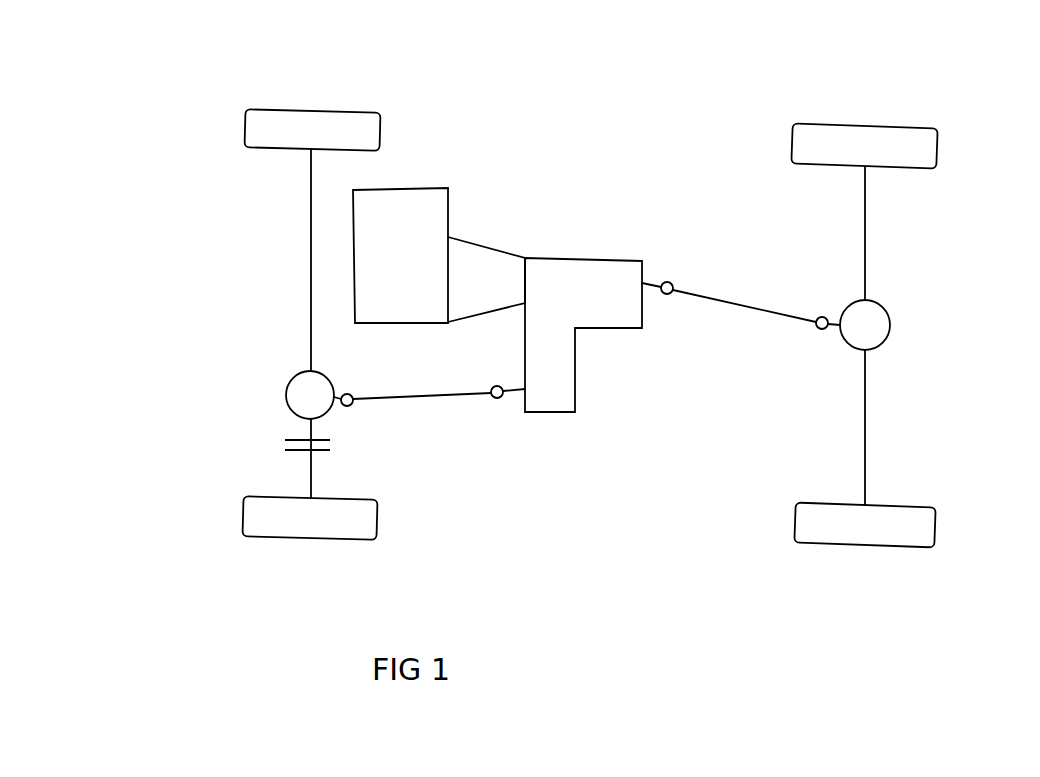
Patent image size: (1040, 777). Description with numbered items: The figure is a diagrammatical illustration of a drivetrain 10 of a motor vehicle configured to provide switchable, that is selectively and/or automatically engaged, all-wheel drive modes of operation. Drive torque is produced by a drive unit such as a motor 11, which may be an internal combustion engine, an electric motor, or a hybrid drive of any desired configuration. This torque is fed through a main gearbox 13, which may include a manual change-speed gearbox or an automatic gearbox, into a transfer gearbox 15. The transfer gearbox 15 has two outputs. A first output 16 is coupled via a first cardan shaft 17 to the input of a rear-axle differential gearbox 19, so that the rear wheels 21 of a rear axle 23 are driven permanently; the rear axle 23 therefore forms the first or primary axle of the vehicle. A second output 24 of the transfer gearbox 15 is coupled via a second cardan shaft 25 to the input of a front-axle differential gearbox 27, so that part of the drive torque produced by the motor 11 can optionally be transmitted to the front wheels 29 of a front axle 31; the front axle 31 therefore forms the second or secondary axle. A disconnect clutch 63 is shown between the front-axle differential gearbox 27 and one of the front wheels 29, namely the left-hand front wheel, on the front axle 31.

The drivetrain 10 is at (570, 190).
The motor 11 is at (399, 265).
The main gearbox 13 is at (488, 298).
The transfer gearbox 15 is at (596, 307).
The first output 16 is at (652, 281).
The first cardan shaft 17 is at (750, 302).
The rear-axle differential gearbox 19 is at (888, 311).
The rear wheels 21 is at (911, 123).
The rear axle 23 is at (892, 249).
The second output 24 is at (517, 394).
The second cardan shaft 25 is at (427, 396).
The front-axle differential gearbox 27 is at (284, 392).
The front wheels 29 is at (258, 108).
The front axle 31 is at (302, 298).
The disconnect clutch 63 is at (279, 446).